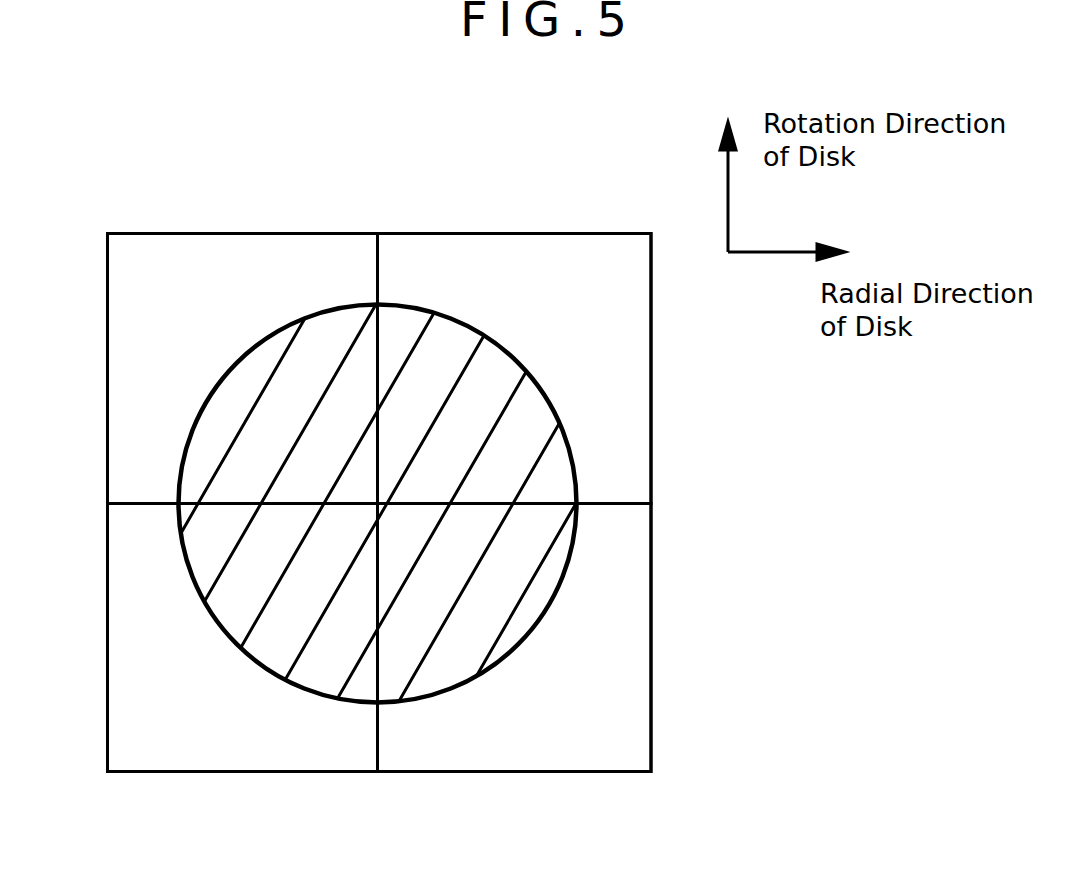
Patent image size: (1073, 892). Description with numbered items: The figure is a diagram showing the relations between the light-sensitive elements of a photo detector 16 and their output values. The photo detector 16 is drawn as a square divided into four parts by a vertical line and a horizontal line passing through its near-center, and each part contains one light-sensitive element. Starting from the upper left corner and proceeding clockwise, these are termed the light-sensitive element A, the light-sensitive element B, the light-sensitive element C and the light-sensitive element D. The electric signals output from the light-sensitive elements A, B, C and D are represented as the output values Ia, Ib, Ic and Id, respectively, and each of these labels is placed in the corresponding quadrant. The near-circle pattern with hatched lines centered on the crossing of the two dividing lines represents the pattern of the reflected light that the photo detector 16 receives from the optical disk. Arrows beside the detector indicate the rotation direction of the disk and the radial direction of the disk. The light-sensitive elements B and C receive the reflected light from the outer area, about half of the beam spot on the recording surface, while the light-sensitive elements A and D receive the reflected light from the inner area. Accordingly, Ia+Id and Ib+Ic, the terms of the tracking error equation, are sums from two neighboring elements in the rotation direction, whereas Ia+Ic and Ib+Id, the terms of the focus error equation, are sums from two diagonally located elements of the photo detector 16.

The photo detector 16 is at (651, 472).
The light-sensitive element A is at (200, 258).
The light-sensitive element B is at (467, 260).
The light-sensitive element C is at (473, 757).
The light-sensitive element D is at (215, 757).
The output value Ia is at (240, 400).
The output value Ib is at (498, 392).
The output value Ic is at (525, 622).
The output value Id is at (212, 563).